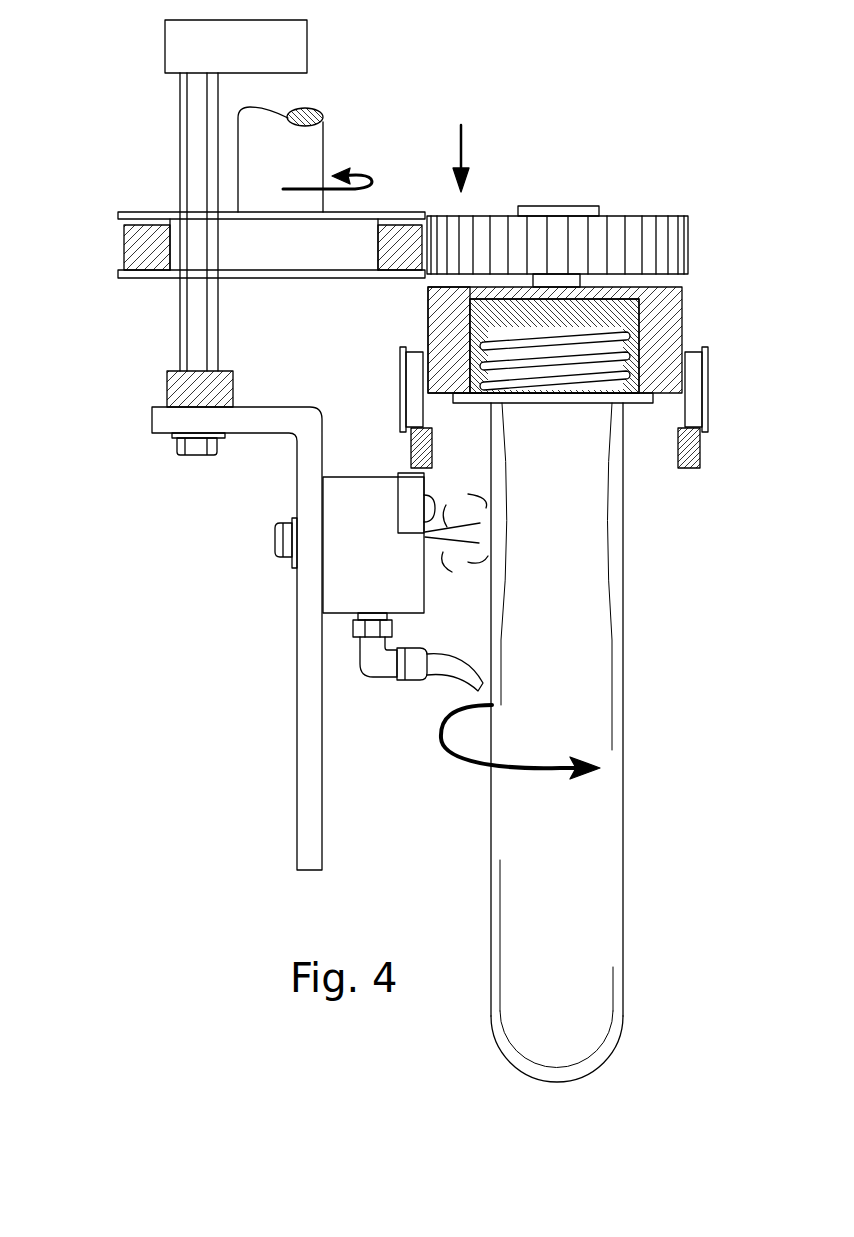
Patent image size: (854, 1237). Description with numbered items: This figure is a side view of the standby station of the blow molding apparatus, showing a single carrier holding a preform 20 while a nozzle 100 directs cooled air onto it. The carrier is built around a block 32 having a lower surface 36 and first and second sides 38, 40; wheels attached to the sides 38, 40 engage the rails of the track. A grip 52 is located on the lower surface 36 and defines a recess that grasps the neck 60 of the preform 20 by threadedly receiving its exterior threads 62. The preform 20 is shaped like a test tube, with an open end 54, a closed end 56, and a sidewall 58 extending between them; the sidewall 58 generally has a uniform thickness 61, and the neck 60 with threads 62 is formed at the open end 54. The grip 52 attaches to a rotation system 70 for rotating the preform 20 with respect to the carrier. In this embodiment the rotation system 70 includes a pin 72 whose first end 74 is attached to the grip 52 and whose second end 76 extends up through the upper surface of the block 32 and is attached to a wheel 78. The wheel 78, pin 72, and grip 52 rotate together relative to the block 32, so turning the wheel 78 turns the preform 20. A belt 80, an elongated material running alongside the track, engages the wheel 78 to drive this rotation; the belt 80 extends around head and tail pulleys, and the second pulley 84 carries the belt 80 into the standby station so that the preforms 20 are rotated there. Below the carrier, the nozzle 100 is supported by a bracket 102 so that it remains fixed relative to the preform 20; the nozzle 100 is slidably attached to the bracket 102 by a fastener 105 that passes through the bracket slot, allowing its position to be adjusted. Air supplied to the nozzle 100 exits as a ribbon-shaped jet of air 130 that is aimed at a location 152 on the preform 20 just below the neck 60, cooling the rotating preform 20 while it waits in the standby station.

The preform 20 is at (567, 754).
The block 32 is at (668, 295).
The lower surface 36 is at (665, 398).
The first side 38 is at (427, 320).
The second side 40 is at (682, 327).
The grip 52 is at (563, 379).
The open end 54 is at (600, 330).
The closed end 56 is at (593, 1068).
The sidewall 58 is at (623, 905).
The neck 60 is at (588, 388).
The uniform thickness 61 is at (491, 900).
The threads 62 is at (607, 358).
The rotation system 70 is at (463, 144).
The pin 72 is at (588, 205).
The first end 74 is at (556, 297).
The second end 76 is at (543, 206).
The wheel 78 is at (667, 236).
The belt 80 is at (142, 241).
The second pulley 84 is at (309, 140).
The nozzle 100 is at (362, 573).
The bracket 102 is at (297, 712).
The fastener 105 is at (283, 540).
The jet of air 130 is at (462, 523).
The location 152 is at (488, 555).